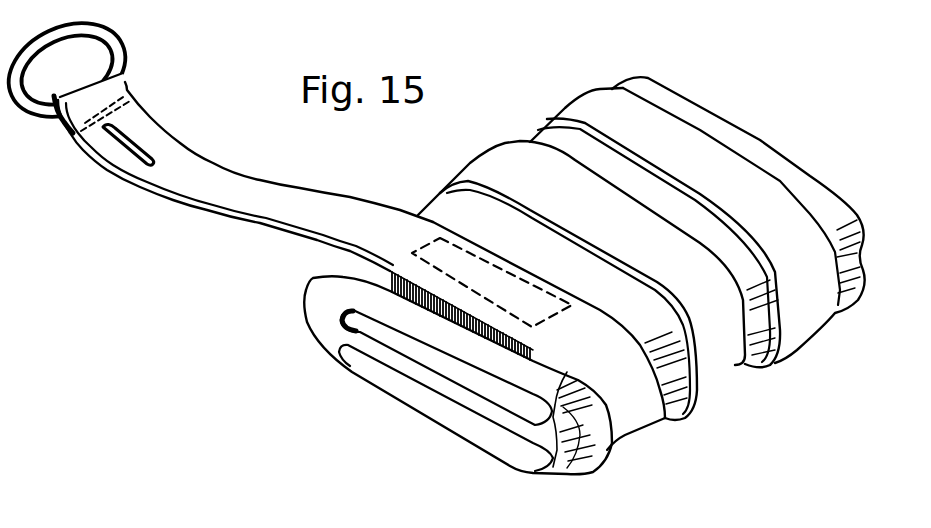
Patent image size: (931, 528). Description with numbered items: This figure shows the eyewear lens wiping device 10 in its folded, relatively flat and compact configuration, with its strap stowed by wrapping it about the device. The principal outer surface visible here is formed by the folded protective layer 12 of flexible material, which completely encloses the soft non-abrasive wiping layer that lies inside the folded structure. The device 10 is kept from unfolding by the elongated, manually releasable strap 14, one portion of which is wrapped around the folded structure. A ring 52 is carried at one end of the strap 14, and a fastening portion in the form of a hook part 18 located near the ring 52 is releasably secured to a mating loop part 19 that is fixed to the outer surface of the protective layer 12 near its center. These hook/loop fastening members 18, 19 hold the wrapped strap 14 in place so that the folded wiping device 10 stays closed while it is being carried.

The eyewear lens wiping device 10 is at (318, 322).
The protective layer 12 is at (808, 178).
The strap 14 is at (328, 215).
The hook part 18 is at (443, 258).
The loop part 19 is at (390, 276).
The ring 52 is at (120, 57).